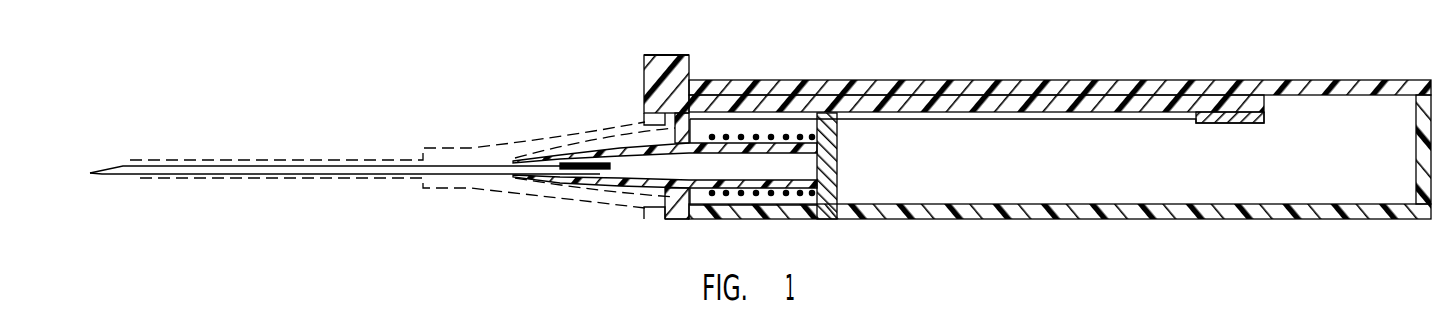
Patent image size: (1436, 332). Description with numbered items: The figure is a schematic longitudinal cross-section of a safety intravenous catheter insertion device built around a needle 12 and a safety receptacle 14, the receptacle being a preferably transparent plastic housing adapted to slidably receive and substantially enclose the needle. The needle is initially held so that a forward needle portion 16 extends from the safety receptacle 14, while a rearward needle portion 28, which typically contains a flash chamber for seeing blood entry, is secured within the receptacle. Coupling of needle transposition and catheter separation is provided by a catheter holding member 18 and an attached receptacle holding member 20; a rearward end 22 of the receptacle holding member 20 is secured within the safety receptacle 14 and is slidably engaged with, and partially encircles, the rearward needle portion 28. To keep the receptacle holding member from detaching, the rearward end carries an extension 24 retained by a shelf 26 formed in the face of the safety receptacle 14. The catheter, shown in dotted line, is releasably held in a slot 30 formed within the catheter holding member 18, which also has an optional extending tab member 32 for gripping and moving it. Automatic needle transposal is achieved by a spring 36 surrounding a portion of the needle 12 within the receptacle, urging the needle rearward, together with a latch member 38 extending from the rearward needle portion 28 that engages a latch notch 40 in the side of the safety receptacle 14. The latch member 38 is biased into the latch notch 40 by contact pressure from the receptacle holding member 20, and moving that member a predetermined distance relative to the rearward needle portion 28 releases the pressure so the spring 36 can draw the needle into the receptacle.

The needle 12 is at (503, 173).
The safety receptacle 14 is at (1144, 80).
The forward needle portion 16 is at (275, 166).
The catheter holding member 18 is at (644, 74).
The receptacle holding member 20 is at (677, 112).
The rearward end of receptacle holding member 22 is at (918, 100).
The extension 24 is at (1228, 113).
The shelf 26 is at (703, 133).
The rearward needle portion 28 is at (752, 167).
The slot 30 is at (644, 117).
The extending tab member 32 is at (667, 55).
The spring 36 is at (712, 196).
The latch member 38 is at (808, 219).
The latch notch 40 is at (837, 216).